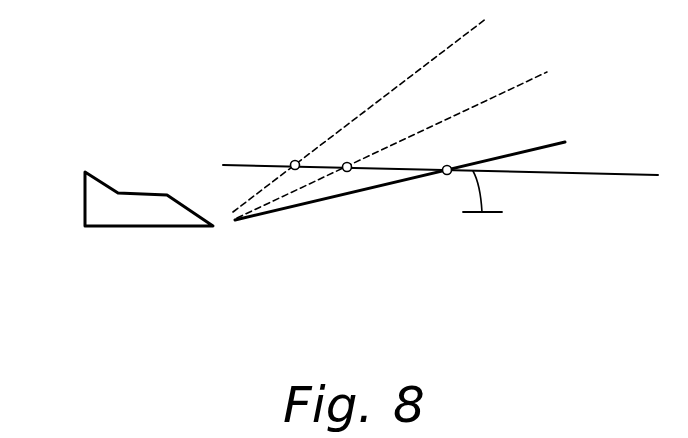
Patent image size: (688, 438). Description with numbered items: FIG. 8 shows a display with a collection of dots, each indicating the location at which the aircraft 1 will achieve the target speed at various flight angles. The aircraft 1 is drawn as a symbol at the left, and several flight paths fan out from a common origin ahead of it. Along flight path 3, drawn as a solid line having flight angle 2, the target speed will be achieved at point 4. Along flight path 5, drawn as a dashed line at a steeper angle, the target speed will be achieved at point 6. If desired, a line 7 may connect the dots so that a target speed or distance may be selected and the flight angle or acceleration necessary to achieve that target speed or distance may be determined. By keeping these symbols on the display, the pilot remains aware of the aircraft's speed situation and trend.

The aircraft 1 is at (85, 195).
The flight angle 2 is at (493, 213).
The flight path 3 is at (545, 143).
The point 4 is at (457, 167).
The flight path 5 is at (418, 70).
The point 6 is at (292, 161).
The line 7 is at (583, 173).